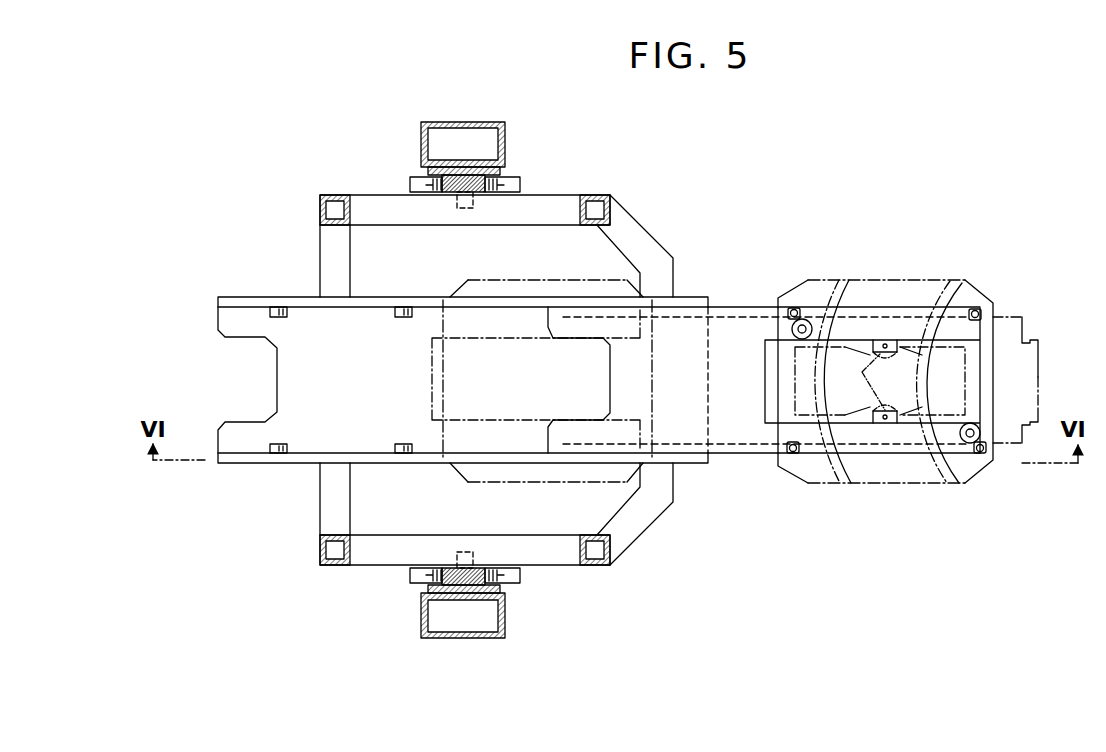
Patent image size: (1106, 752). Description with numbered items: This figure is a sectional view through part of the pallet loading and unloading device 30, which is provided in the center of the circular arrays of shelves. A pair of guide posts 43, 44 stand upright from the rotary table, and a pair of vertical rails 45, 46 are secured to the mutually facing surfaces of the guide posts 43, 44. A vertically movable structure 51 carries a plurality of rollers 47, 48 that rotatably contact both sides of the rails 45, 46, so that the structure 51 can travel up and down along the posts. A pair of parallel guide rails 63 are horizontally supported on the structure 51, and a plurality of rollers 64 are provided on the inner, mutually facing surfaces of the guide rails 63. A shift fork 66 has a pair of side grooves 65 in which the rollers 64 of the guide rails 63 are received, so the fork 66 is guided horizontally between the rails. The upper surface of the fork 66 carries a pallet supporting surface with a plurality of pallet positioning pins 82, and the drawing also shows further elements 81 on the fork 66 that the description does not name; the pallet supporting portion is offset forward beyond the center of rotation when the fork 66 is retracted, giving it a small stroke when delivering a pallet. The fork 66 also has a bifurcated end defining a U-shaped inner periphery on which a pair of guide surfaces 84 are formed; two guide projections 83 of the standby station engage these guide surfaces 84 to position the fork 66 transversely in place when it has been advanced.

The pallet loading and unloading device 30 is at (522, 404).
The guide post 43 is at (458, 640).
The guide post 44 is at (473, 123).
The vertical rail 45 is at (470, 600).
The vertical rail 46 is at (460, 173).
The rollers 47 is at (415, 582).
The rollers 48 is at (420, 185).
The vertically movable structure 51 is at (570, 560).
The guide rails 63 is at (302, 298).
The rollers 64 is at (396, 316).
The side grooves 65 is at (735, 317).
The shift fork 66 is at (747, 428).
The screws 81 is at (793, 309).
The pallet positioning pins 82 is at (806, 322).
The guide projections 83 is at (862, 372).
The guide surfaces 84 is at (886, 338).